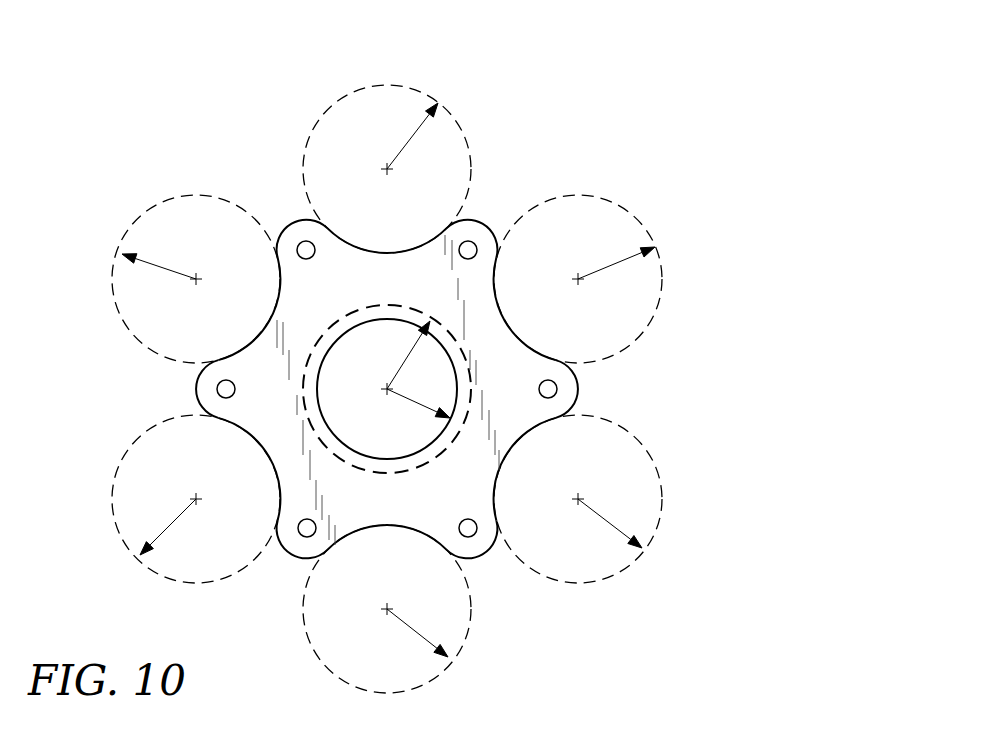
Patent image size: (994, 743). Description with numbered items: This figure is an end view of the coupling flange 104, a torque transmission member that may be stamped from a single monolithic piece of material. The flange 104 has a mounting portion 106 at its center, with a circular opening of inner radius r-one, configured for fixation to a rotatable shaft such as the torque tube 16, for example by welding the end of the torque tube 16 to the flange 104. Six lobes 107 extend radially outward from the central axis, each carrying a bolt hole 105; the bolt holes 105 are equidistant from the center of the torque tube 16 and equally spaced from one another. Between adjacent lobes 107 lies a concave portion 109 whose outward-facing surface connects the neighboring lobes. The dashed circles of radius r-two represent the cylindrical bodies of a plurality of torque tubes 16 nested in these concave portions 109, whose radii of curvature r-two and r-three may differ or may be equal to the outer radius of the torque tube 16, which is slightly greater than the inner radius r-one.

The coupling flange 104 is at (374, 364).
The bolt holes 105 is at (548, 389).
The mounting portion 106 is at (478, 227).
The lobes 107 is at (293, 222).
The concave portion 109 is at (260, 333).
The torque tube 16 is at (423, 455).